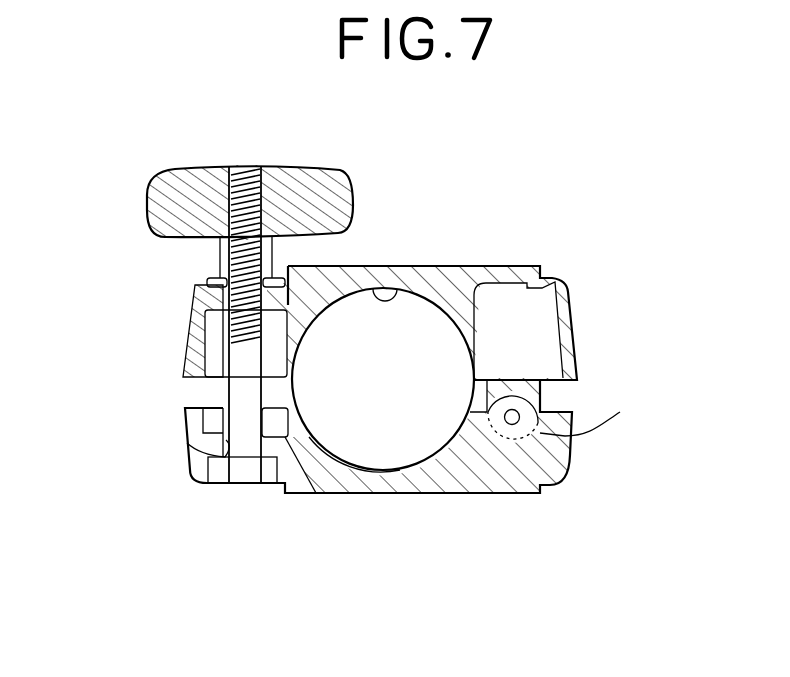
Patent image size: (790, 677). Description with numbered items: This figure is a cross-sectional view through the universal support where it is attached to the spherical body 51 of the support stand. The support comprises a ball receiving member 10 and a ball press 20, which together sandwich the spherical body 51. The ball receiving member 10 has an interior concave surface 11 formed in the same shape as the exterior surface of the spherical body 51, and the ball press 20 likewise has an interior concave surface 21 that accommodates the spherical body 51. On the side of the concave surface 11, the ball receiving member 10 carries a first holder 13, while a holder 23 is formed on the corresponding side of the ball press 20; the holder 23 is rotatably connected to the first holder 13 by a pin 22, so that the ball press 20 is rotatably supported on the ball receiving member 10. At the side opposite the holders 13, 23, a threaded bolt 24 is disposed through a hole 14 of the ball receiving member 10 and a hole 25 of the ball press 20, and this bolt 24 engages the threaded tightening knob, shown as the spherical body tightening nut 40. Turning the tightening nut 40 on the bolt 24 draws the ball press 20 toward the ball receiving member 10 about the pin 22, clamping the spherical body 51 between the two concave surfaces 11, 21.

The spherical body tightening nut 40 is at (180, 170).
The ball receiving member 10 is at (443, 272).
The interior concave surface 11 is at (385, 297).
The hole 14 is at (222, 292).
The threaded bolt 24 is at (238, 394).
The hole 25 is at (227, 448).
The spherical body 51 is at (385, 390).
The holder 23 is at (545, 390).
The first holder 13 is at (627, 401).
The interior concave surface 21 is at (338, 450).
The pin 22 is at (512, 425).
The ball press 20 is at (353, 497).